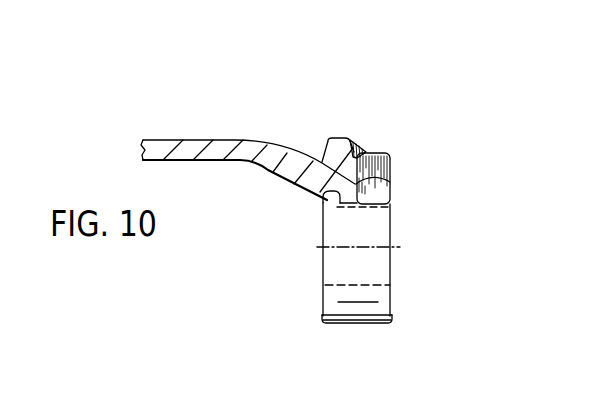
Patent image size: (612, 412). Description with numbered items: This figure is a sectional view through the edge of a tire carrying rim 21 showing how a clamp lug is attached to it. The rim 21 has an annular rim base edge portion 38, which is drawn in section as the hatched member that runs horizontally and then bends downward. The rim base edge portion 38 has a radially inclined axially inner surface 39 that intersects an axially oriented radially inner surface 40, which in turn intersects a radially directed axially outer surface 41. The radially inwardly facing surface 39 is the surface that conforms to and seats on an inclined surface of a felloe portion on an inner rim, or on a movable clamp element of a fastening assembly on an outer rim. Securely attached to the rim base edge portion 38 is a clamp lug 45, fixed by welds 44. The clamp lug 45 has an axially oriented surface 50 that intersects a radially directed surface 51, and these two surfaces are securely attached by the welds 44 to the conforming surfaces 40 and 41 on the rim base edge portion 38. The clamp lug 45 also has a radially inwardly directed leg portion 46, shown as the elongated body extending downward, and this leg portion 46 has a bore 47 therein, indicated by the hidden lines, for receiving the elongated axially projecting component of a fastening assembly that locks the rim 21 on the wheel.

The tire carrying rim 21 is at (203, 111).
The rim base edge portion 38 is at (303, 189).
The radially inclined axially inner surface 39 is at (287, 173).
The axially oriented radially inner surface 40 is at (340, 203).
The radially directed axially outer surface 41 is at (390, 182).
The weld 44 is at (361, 141).
The clamp lug 45 is at (393, 311).
The radially inwardly directed leg portion 46 is at (380, 324).
The bore 47 is at (368, 285).
The axially oriented surface 50 is at (322, 203).
The radially directed surface 51 is at (320, 161).